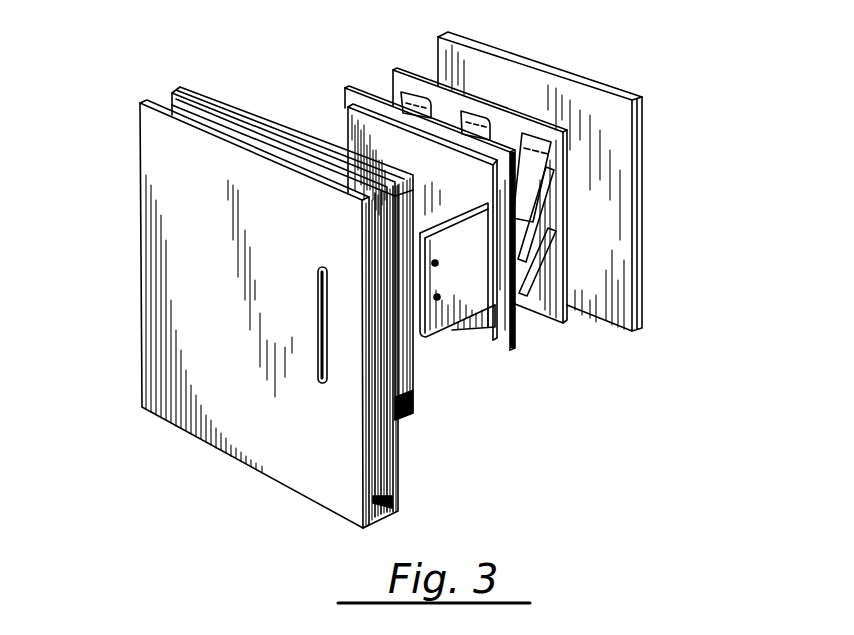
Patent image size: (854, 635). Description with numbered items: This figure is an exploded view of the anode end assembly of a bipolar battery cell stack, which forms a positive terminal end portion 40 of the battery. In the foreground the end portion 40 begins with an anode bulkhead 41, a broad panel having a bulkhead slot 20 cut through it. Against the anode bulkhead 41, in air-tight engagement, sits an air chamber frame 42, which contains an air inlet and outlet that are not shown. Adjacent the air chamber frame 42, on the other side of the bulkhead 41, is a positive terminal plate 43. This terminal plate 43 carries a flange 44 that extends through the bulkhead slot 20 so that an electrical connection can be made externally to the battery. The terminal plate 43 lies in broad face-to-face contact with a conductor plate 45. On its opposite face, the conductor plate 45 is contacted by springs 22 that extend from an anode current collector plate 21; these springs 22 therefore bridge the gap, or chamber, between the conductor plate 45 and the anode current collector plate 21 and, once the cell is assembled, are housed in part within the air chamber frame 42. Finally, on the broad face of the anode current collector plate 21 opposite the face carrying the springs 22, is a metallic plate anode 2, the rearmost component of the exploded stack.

The positive terminal end portion 40 is at (212, 47).
The metallic plate anode 2 is at (640, 157).
The anode current collector plate 21 is at (568, 305).
The springs 22 is at (549, 207).
The conductor plate 45 is at (515, 350).
The positive terminal plate 43 is at (485, 340).
The flange 44 is at (442, 328).
The air chamber frame 42 is at (408, 418).
The anode bulkhead 41 is at (198, 440).
The bulkhead slot 20 is at (322, 385).